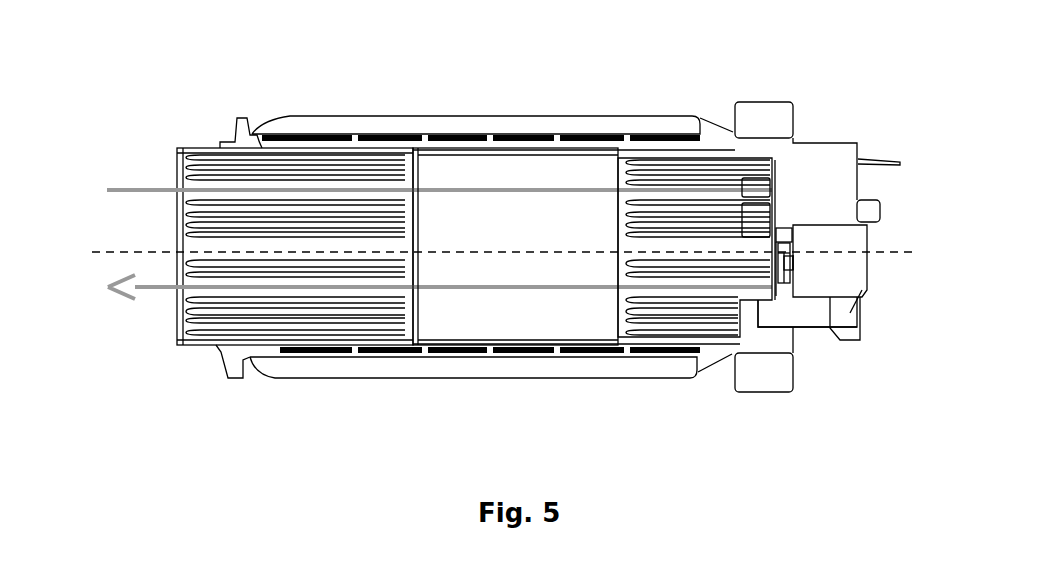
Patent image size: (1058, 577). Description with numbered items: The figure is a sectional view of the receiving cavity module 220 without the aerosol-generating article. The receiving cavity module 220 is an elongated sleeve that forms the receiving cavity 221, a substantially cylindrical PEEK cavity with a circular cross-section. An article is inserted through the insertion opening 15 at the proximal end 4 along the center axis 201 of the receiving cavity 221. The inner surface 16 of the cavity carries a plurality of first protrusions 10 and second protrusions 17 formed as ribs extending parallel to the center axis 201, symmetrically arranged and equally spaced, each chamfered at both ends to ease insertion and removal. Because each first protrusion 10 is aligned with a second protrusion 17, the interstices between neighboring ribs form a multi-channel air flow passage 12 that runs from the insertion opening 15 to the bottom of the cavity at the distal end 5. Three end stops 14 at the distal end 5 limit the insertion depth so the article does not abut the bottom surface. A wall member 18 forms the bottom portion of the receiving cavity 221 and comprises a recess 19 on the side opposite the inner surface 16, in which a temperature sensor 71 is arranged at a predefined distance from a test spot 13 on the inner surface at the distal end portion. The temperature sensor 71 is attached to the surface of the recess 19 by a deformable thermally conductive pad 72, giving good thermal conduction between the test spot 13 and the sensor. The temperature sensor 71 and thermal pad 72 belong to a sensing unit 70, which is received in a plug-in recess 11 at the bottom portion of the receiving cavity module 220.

The receiving cavity module 220 is at (196, 96).
The proximal end 4 is at (183, 378).
The center axis 201 is at (108, 250).
The insertion opening 15 is at (160, 190).
The second protrusions 17 is at (288, 158).
The multi-channel air flow passage 12 is at (212, 228).
The inner surface 16 is at (504, 181).
The receiving cavity 221 is at (452, 321).
The first protrusions 10 is at (693, 162).
The end stops 14 is at (752, 187).
The test spot 13 is at (767, 262).
The wall member 18 is at (781, 235).
The thermally conductive pad 72 is at (784, 272).
The temperature sensor 71 is at (791, 262).
The sensing unit 70 is at (831, 268).
The plug-in recess 11 is at (848, 217).
The recess 19 is at (800, 265).
The distal end 5 is at (768, 322).